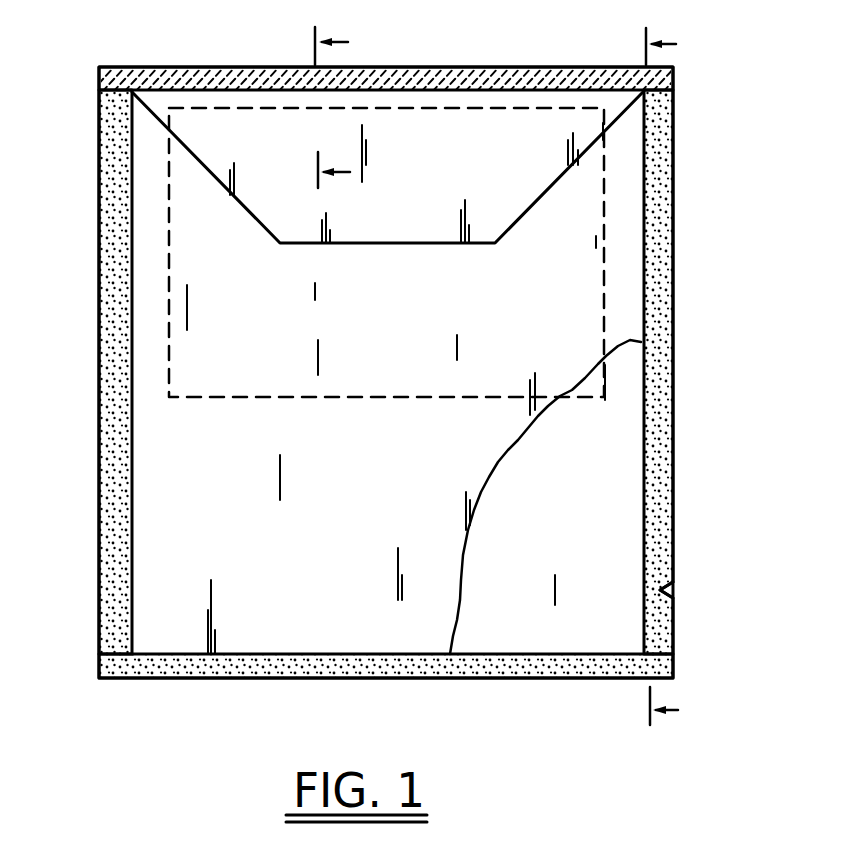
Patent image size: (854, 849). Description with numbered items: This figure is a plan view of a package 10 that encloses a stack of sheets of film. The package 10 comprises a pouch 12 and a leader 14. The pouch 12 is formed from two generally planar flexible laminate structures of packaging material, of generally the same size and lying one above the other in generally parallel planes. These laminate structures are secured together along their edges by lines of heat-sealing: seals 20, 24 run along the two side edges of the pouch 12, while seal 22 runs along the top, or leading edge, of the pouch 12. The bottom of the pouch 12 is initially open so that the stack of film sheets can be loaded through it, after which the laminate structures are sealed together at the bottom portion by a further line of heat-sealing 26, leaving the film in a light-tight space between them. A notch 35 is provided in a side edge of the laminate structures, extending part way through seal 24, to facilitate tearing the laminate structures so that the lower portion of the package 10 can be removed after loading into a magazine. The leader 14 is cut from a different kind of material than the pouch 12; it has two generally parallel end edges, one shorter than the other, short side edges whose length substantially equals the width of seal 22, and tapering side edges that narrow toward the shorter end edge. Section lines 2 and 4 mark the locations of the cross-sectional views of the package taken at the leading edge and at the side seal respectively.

The package 10 is at (710, 159).
The pouch 12 is at (673, 405).
The leader 14 is at (215, 123).
The line of heat-sealing 20 is at (104, 375).
The line of heat-sealing 22 is at (417, 65).
The line of heat-sealing 24 is at (660, 279).
The line of heat-sealing 26 is at (522, 663).
The notch 35 is at (673, 592).
The section line 2- 2 is at (321, 107).
The section line 4- 4 is at (652, 377).